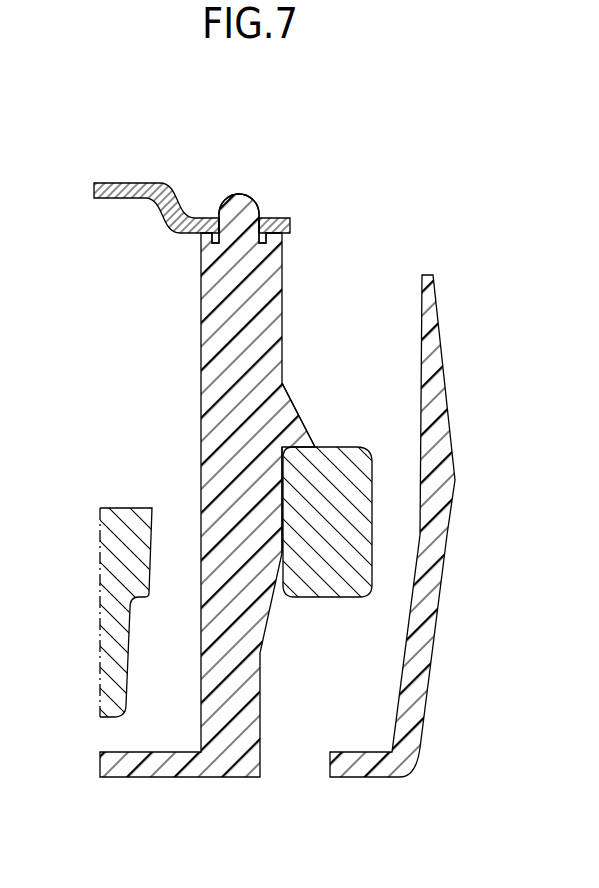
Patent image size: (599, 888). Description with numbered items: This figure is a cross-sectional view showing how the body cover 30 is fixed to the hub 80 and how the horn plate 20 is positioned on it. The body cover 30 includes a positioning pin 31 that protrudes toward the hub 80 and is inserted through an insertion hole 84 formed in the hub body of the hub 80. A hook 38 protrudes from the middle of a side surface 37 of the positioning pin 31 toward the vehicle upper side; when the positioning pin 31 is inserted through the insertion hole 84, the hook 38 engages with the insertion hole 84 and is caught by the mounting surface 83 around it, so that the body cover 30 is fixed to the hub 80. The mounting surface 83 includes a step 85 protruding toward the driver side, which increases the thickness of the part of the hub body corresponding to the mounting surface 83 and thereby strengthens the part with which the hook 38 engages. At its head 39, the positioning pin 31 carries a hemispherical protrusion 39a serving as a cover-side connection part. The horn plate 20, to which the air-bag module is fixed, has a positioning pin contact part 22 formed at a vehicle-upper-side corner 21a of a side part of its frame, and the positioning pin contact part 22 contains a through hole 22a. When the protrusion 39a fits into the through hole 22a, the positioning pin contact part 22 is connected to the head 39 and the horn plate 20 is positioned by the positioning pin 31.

The horn plate 20 is at (182, 200).
The vehicle-upper-side corner 21a is at (127, 183).
The positioning pin contact part 22 is at (280, 218).
The through hole 22a is at (222, 216).
The body cover 30 is at (277, 527).
The positioning pin 31 is at (188, 322).
The side surface 37 is at (282, 368).
The hook 38 is at (293, 433).
The head 39 is at (233, 250).
The hemispherical protrusion 39a is at (241, 194).
The hub 80 is at (241, 565).
The mounting surface 83 is at (111, 508).
The insertion hole 84 is at (178, 462).
The step 85 is at (330, 447).